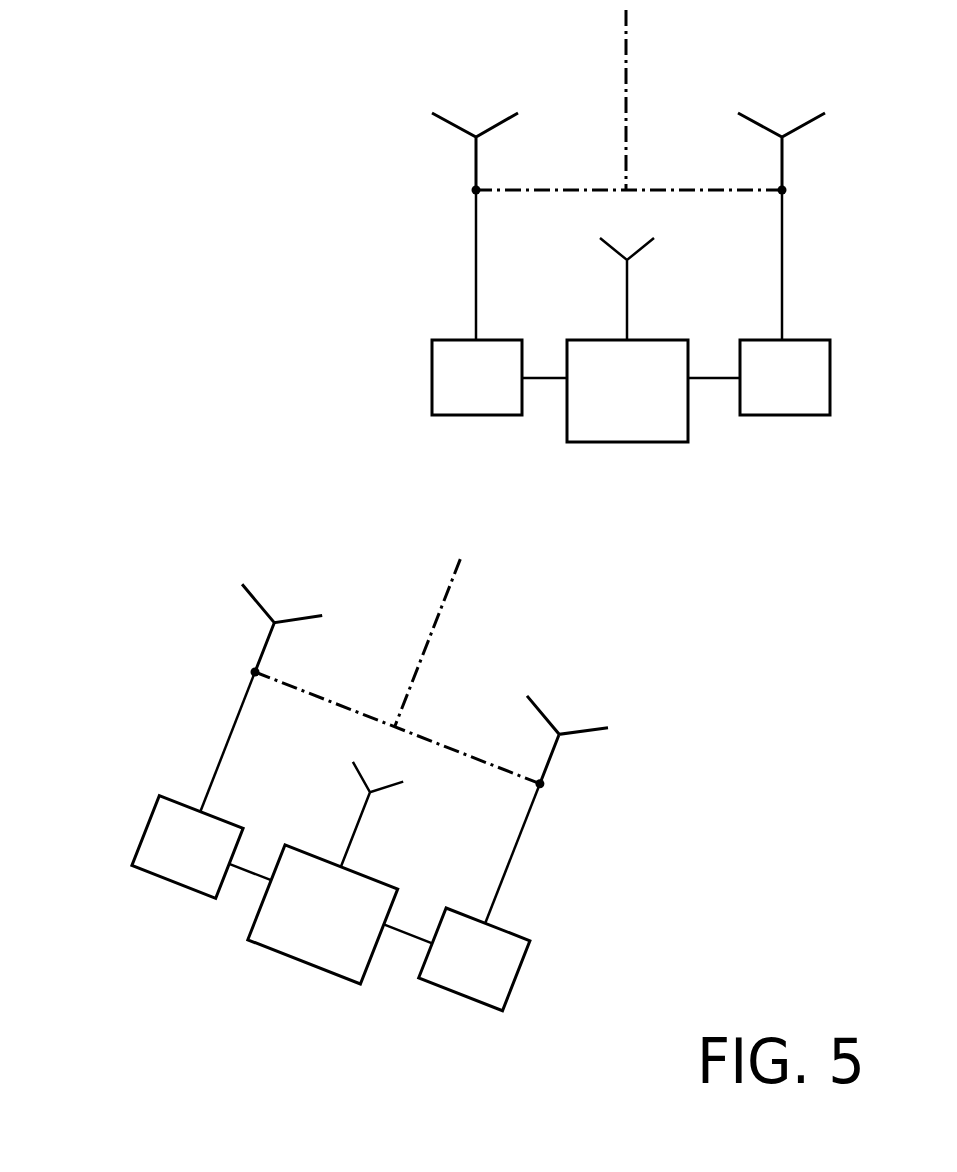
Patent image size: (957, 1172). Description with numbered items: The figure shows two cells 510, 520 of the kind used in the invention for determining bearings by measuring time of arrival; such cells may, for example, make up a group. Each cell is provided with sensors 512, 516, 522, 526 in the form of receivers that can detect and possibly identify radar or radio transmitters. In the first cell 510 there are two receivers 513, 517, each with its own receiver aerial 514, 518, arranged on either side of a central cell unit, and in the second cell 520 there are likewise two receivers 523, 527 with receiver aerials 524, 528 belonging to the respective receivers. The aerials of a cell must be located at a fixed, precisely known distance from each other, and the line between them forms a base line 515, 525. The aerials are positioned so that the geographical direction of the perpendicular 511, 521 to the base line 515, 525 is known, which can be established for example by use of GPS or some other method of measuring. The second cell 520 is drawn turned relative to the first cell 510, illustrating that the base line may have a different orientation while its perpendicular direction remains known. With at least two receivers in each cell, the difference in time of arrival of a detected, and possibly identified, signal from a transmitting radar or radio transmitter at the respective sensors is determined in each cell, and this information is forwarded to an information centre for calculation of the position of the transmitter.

The cell 510 is at (697, 469).
The perpendicular 511 is at (626, 110).
The sensor 512 is at (462, 282).
The receiver 513 is at (432, 380).
The receiver aerial 514 is at (473, 168).
The base line 515 is at (668, 190).
The sensor 516 is at (795, 283).
The receiver 517 is at (830, 377).
The receiver aerial 518 is at (785, 163).
The cell 520 is at (349, 1012).
The perpendicular 521 is at (435, 628).
The sensor 522 is at (208, 753).
The receiver 523 is at (144, 833).
The receiver aerial 524 is at (262, 652).
The base line 525 is at (433, 742).
The sensor 526 is at (513, 875).
The receiver 527 is at (515, 978).
The receiver aerial 528 is at (548, 762).